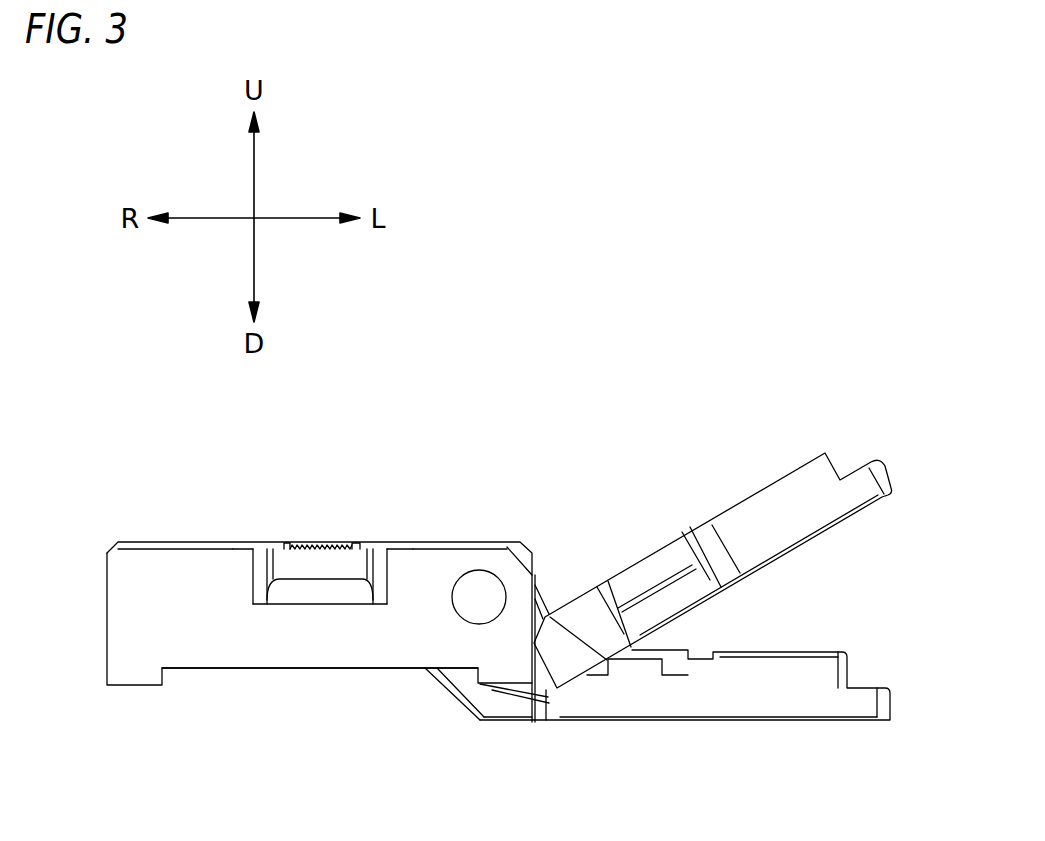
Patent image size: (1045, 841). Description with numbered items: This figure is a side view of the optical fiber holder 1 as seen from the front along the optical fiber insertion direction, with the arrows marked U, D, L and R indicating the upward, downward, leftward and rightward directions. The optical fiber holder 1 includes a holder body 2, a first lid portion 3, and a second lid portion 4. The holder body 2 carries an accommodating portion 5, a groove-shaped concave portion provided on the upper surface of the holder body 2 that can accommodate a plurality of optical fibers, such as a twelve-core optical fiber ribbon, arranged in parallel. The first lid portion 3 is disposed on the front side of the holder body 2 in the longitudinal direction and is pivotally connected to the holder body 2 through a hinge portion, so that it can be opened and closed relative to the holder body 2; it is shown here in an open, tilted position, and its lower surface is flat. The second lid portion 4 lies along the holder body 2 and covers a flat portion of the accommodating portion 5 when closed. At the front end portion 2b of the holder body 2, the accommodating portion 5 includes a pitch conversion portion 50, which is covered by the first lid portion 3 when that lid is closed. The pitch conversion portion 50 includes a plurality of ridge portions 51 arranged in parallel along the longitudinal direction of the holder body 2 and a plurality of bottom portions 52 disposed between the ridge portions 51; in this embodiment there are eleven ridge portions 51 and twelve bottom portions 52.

The optical fiber holder 1 is at (588, 395).
The holder body 2 is at (107, 610).
The front end portion 2b is at (318, 651).
The first lid portion 3 is at (890, 478).
The second lid portion 4 is at (892, 703).
The accommodating portion 5 is at (300, 430).
The pitch conversion portion 50 is at (300, 528).
The ridge portions 51 is at (347, 548).
The bottom portions 52 is at (356, 548).